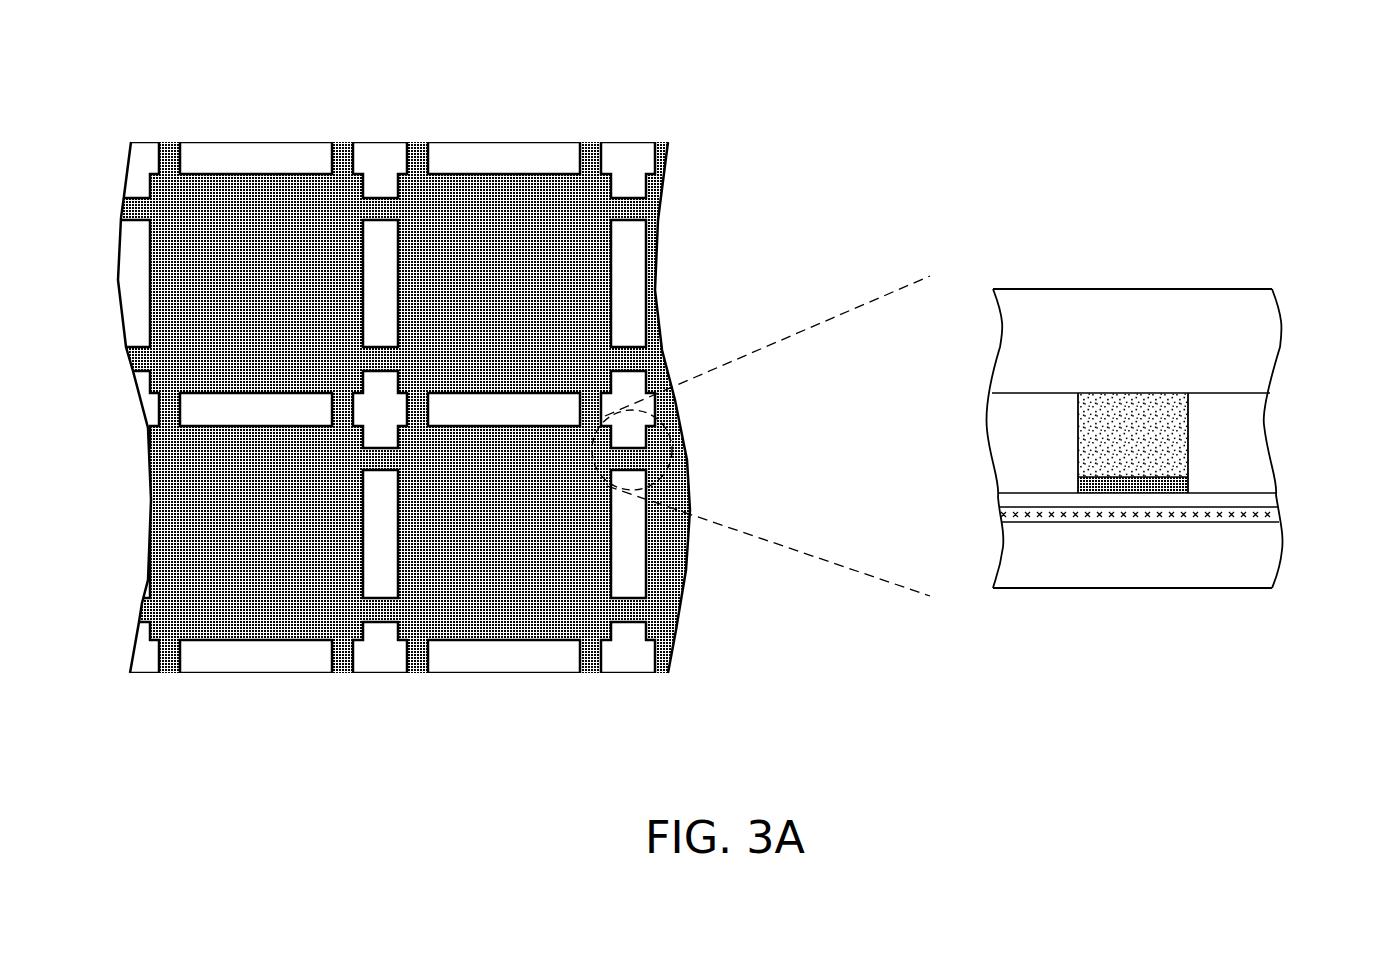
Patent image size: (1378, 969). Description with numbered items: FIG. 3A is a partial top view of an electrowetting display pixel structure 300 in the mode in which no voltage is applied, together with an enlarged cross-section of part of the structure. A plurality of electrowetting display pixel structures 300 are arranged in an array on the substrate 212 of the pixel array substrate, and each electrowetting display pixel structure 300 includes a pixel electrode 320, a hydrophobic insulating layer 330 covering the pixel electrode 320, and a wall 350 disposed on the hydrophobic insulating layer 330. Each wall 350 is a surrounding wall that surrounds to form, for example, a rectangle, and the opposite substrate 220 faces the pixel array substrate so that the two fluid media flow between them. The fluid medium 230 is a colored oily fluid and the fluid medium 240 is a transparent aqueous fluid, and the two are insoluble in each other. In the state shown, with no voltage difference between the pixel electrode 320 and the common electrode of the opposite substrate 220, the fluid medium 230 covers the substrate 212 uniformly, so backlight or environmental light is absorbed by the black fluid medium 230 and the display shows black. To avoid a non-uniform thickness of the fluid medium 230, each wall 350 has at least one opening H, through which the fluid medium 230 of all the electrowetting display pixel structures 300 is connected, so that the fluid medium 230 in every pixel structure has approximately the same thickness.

The opening H is at (342, 141).
The substrate 212 is at (1272, 550).
The opposite substrate 220 is at (1268, 337).
The fluid medium 230 is at (542, 198).
The fluid medium 240 is at (1132, 417).
The electrowetting display pixel structure 300 is at (1097, 679).
The pixel electrode 320 is at (1073, 517).
The hydrophobic insulating layer 330 is at (1028, 500).
The wall 350 is at (256, 165).